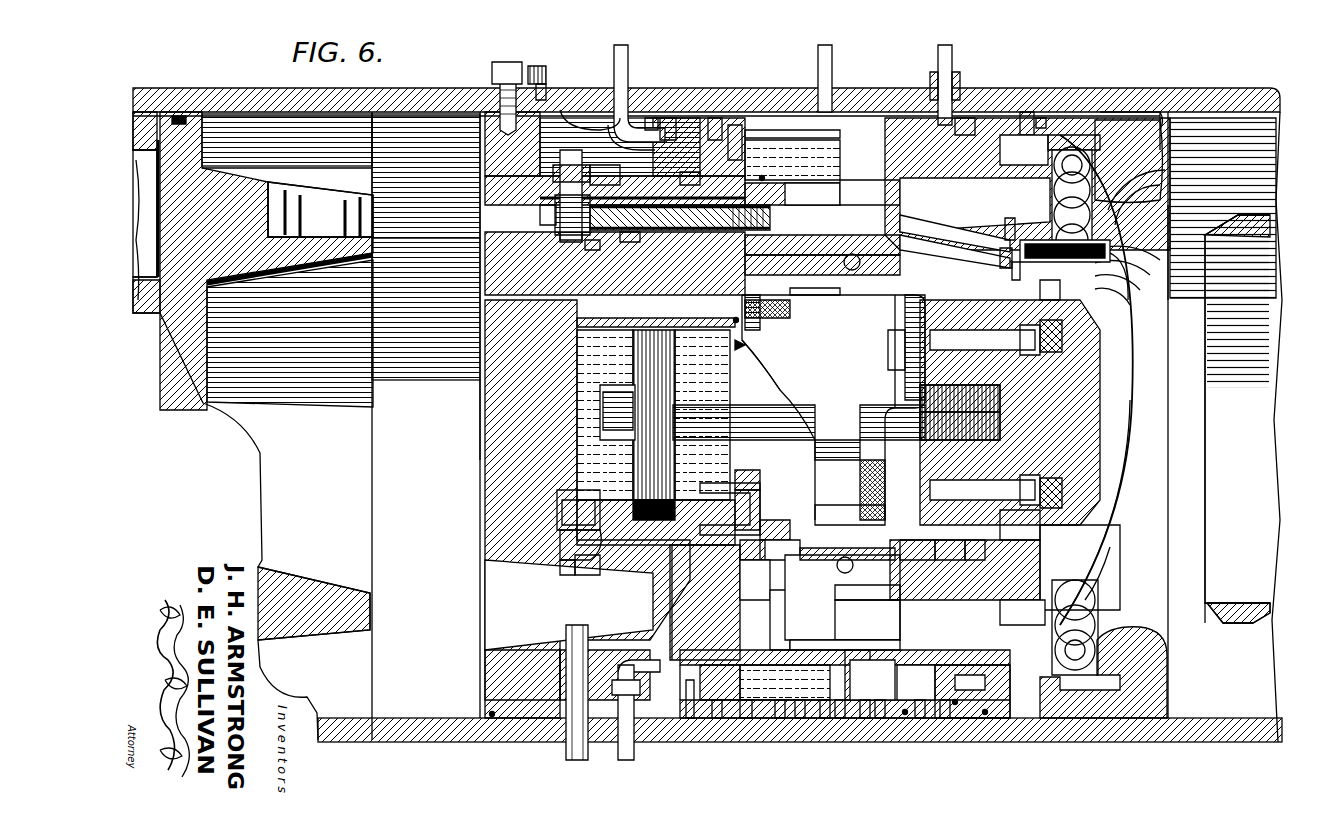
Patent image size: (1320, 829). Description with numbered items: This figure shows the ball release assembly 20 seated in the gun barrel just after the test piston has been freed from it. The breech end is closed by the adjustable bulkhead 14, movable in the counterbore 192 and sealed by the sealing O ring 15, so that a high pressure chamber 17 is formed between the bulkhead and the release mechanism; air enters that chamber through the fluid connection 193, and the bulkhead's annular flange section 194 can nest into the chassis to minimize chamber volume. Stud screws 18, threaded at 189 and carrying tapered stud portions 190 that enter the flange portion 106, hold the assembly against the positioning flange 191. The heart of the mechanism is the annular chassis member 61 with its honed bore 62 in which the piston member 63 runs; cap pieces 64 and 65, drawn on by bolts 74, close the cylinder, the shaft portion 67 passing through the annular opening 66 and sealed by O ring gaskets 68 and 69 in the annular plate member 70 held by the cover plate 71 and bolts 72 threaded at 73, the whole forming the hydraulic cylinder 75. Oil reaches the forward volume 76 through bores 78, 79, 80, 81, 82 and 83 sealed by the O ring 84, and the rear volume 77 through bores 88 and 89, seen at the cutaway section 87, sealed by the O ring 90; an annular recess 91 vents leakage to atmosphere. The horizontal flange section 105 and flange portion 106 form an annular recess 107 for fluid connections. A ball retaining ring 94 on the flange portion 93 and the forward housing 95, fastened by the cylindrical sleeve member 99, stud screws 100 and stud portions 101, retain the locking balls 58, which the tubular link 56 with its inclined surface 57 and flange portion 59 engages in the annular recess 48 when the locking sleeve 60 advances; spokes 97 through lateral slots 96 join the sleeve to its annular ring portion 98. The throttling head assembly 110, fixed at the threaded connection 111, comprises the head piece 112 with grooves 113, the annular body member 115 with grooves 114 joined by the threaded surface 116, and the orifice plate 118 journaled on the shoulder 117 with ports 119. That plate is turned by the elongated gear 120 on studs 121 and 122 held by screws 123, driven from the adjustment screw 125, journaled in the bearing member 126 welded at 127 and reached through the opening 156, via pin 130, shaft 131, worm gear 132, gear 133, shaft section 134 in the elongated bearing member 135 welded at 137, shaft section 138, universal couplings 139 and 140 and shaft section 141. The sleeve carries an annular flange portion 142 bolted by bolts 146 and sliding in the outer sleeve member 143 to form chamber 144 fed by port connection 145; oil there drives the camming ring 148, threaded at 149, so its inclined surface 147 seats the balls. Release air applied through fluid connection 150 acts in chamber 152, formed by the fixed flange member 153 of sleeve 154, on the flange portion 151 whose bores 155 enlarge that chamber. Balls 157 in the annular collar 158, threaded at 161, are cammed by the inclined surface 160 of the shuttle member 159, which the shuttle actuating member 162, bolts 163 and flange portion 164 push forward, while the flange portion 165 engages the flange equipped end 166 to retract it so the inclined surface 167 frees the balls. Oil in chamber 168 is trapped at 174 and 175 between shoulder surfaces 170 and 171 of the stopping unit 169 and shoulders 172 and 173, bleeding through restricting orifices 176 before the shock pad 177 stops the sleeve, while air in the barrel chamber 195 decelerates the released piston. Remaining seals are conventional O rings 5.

The O ring 5 is at (763, 178).
The bulkhead 14 is at (155, 218).
The sealing O ring 15 is at (178, 116).
The high pressure chamber 17 is at (411, 398).
The stud screws 18 is at (536, 66).
The ball release assembly 20 is at (470, 416).
The annular recess 48 is at (1020, 623).
The tubular link 56 is at (1214, 436).
The inclined surface 57 is at (1216, 622).
The locking balls 58 is at (1056, 168).
The flange portion 59 is at (1250, 630).
The locking sleeve 60 is at (920, 718).
The chassis member 61 is at (647, 280).
The bore 62 is at (700, 500).
The piston member 63 is at (677, 398).
The cap piece 64 is at (485, 462).
The cap piece 65 is at (811, 348).
The annular opening 66 is at (782, 392).
The shaft portion 67 is at (752, 408).
The O ring gasket 68 is at (870, 425).
The O ring gasket 69 is at (870, 460).
The annular plate member 70 is at (870, 497).
The cover plate 71 is at (892, 310).
The bolts 72 is at (888, 350).
The threaded connection 73 is at (858, 508).
The bolts 74 is at (788, 309).
The hydraulic cylinder 75 is at (745, 345).
The forward volume 76 is at (708, 463).
The rear volume 77 is at (606, 466).
The bore 78 is at (636, 752).
The bore 79 is at (676, 628).
The bore 80 is at (718, 528).
The bore 81 is at (748, 548).
The bore 82 is at (762, 502).
The bore 83 is at (742, 478).
The O ring 84 is at (742, 518).
The cutaway section 87 is at (568, 572).
The bore 88 is at (596, 570).
The bore 89 is at (558, 560).
The O ring 90 is at (580, 505).
The annular recess 91 is at (857, 438).
The flange portion 93 is at (792, 194).
The ball retaining ring 94 is at (935, 200).
The forward housing 95 is at (1120, 171).
The lateral slots 96 is at (840, 194).
The spokes 97 is at (814, 608).
The annular ring portion 98 is at (795, 238).
The cylindrical sleeve member 99 is at (833, 95).
The stud screws 100 is at (668, 118).
The stud portions 101 is at (651, 118).
The horizontal flange section 105 is at (600, 630).
The flange portion 106 is at (488, 684).
The annular recess 107 is at (606, 663).
The throttling head assembly 110 is at (1133, 521).
The threaded connection 111 is at (1002, 442).
The head piece 112 is at (1122, 545).
The grooves 113 is at (1068, 543).
The grooves 114 is at (988, 566).
The annular body member 115 is at (1010, 520).
The threaded surface 116 is at (1072, 345).
The shoulder 117 is at (1062, 352).
The orifice plate 118 is at (1055, 318).
The ports 119 is at (1046, 292).
The elongated gear 120 is at (1062, 264).
The stud 121 is at (1013, 262).
The stud 122 is at (1122, 262).
The screws 123 is at (1170, 212).
The adjustment screw 125 is at (548, 150).
The bearing member 126 is at (553, 172).
The weld 127 is at (590, 178).
The pin 130 is at (556, 210).
The shaft 131 is at (568, 240).
The worm gear 132 is at (545, 220).
The gear 133 is at (592, 250).
The shaft section 134 is at (628, 243).
The elongated bearing member 135 is at (736, 208).
The weld 137 is at (655, 242).
The shaft section 138 is at (937, 234).
The universal coupling 139 is at (966, 246).
The universal coupling 140 is at (852, 256).
The shaft section 141 is at (1010, 218).
The annular flange portion 142 is at (735, 125).
The outer sleeve member 143 is at (715, 718).
The chamber 144 is at (714, 118).
The port connection 145 is at (630, 47).
The bolts 146 is at (690, 180).
The inclined surface 147 is at (1056, 150).
The camming ring 148 is at (1007, 158).
The threads 149 is at (1265, 625).
The fluid connection 150 is at (944, 48).
The flange portion 151 is at (770, 134).
The chamber 152 is at (905, 683).
The fixed flange member 153 is at (968, 122).
The sleeve 154 is at (945, 718).
The bores 155 is at (855, 681).
The opening 156 is at (585, 92).
The balls 157 is at (790, 528).
The annular collar 158 is at (855, 570).
The shuttle member 159 is at (795, 550).
The inclined surface 160 is at (840, 597).
The threads 161 is at (742, 575).
The shuttle actuating member 162 is at (942, 562).
The bolts 163 is at (975, 560).
The flange portion 164 is at (822, 292).
The flange portion 165 is at (906, 565).
The flange equipped end 166 is at (872, 640).
The inclined surface 167 is at (775, 602).
The chamber 168 is at (746, 718).
The stopping unit 169 is at (780, 718).
The shoulder surface 170 is at (800, 718).
The shoulder surface 171 is at (840, 718).
The shoulder 172 is at (840, 658).
The shoulder 173 is at (855, 665).
The trapped oil 174 is at (865, 718).
The trapped oil 175 is at (880, 718).
The restricting orifices 176 is at (825, 718).
The shock pad 177 is at (692, 720).
The threads 189 is at (498, 80).
The tapered stud portions 190 is at (540, 96).
The positioning flange 191 is at (1162, 116).
The counterbore 192 is at (1118, 110).
The fluid connection 193 is at (568, 750).
The annular flange section 194 is at (348, 232).
The barrel chamber 195 is at (1198, 176).